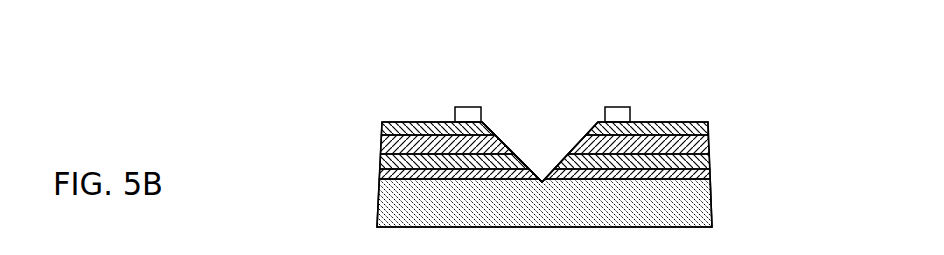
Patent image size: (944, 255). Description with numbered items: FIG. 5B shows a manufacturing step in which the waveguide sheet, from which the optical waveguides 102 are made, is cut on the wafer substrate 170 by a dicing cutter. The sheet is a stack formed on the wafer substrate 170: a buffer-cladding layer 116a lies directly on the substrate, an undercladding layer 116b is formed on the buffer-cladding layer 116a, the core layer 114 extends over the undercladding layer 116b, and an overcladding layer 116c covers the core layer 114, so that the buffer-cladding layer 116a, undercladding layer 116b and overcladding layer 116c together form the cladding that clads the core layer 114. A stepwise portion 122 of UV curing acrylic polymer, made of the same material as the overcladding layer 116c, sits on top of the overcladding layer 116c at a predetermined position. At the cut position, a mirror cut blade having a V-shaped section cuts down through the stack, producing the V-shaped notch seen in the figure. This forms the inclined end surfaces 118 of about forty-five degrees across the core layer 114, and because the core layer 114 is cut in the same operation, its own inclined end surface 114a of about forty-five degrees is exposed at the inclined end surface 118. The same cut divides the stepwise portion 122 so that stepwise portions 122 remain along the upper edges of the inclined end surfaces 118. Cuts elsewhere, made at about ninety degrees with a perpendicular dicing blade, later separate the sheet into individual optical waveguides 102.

The optical waveguide 102 is at (708, 123).
The core layer 114 is at (382, 135).
The inclined end surface 114a is at (500, 135).
The buffer-cladding layer 116a is at (382, 176).
The undercladding layer 116b is at (382, 158).
The overcladding layer 116c is at (383, 122).
The inclined end surface 118 is at (573, 147).
The stepwise portion 122 is at (462, 107).
The wafer substrate 170 is at (707, 195).